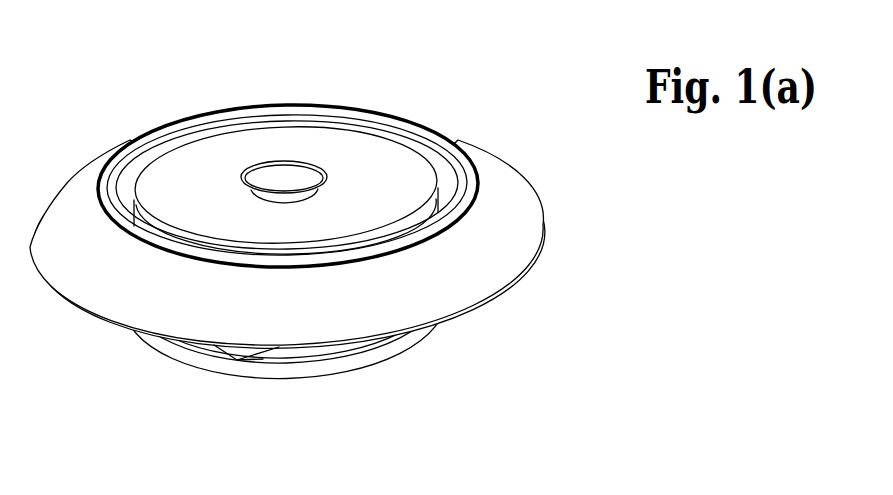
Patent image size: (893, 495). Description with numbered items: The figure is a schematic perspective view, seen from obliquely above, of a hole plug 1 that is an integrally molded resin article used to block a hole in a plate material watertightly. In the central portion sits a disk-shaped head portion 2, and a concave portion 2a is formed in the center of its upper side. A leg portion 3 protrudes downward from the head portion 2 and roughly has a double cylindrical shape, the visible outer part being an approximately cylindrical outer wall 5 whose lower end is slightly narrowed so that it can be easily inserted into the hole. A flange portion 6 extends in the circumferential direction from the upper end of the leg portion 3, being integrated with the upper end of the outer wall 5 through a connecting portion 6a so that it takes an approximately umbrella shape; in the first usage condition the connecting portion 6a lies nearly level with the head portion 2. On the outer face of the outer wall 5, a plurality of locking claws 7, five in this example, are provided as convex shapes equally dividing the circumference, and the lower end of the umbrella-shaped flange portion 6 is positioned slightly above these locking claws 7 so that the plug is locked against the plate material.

The hole plug 1 is at (424, 110).
The head portion 2 is at (355, 146).
The concave portion 2a is at (289, 181).
The leg portion 3 is at (401, 361).
The outer wall 5 is at (412, 337).
The flange portion 6 is at (520, 209).
The connecting portion 6a is at (458, 141).
The locking claw 7 is at (236, 361).